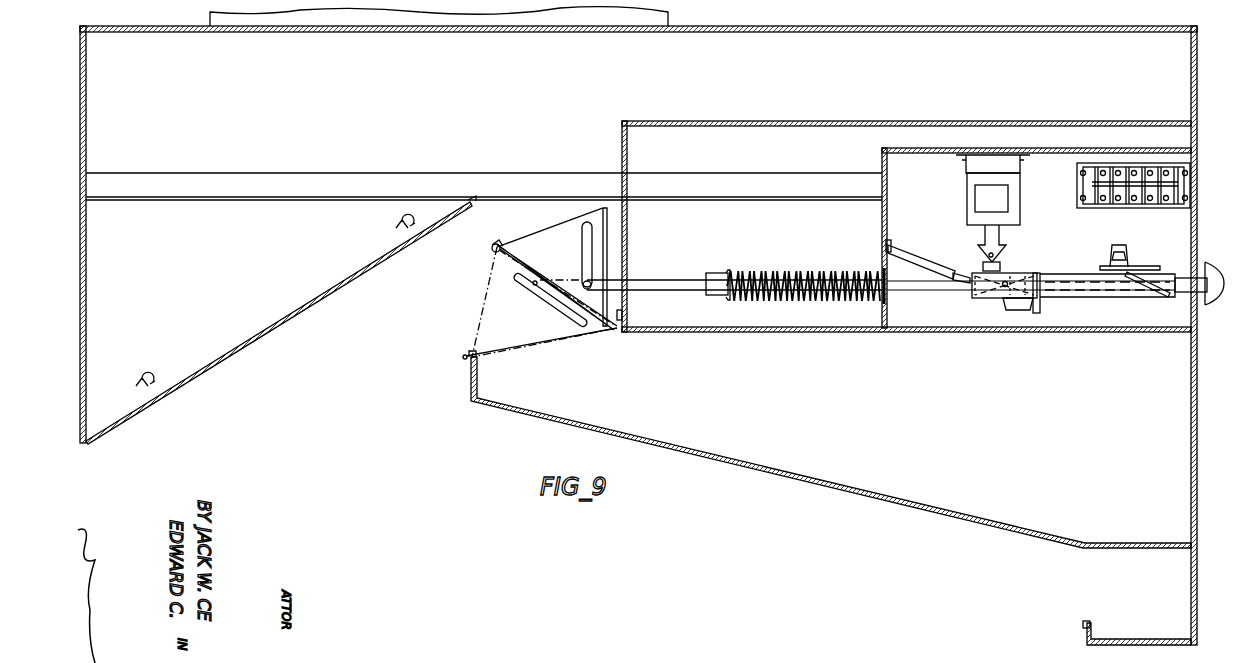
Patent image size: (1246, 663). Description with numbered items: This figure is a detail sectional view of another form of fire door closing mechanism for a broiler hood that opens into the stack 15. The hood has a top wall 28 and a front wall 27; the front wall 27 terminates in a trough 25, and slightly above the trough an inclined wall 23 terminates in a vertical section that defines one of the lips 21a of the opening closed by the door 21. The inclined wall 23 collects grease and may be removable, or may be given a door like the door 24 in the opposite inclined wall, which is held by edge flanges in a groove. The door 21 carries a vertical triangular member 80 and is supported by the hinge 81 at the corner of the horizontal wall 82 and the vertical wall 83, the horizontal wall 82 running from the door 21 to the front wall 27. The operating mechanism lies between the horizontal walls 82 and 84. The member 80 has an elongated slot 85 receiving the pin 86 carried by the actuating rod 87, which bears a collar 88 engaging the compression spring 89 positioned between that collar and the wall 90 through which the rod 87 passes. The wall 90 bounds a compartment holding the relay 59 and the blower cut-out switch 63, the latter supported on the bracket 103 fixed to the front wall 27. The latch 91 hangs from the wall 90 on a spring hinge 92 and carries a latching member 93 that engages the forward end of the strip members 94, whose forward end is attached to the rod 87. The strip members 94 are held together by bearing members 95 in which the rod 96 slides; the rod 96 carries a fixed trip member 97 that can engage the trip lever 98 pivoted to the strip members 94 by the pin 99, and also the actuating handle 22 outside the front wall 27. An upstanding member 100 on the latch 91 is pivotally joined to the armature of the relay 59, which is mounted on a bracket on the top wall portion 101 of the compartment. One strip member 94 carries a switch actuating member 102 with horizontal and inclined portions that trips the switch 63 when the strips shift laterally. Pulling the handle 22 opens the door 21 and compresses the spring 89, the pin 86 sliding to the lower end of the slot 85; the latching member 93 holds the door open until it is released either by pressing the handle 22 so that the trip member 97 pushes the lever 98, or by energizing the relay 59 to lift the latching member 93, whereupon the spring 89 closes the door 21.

The stack 15 is at (670, 12).
The top wall 28 is at (870, 26).
The front wall 27 is at (1191, 396).
The door 24 is at (256, 326).
The inclined wall 23 is at (772, 470).
The trough 25 is at (1110, 638).
The horizontal wall 84 is at (680, 126).
The horizontal wall 82 is at (692, 336).
The top wall portion 101 is at (985, 150).
The relay 59 is at (985, 198).
The upstanding member 100 is at (996, 262).
The blower cut-out switch 63 is at (1110, 250).
The bracket 103 is at (1122, 258).
The door 21 is at (500, 252).
The vertical triangular member 80 is at (528, 240).
The lip 21a is at (462, 364).
The hinge 81 is at (616, 333).
The elongated slot 85 is at (588, 240).
The vertical wall 83 is at (624, 314).
The actuating rod 87 is at (690, 280).
The pin 86 is at (600, 281).
The collar 88 is at (730, 270).
The compression spring 89 is at (802, 272).
The wall 90 is at (886, 245).
The spring hinge 92 is at (891, 244).
The latch 91 is at (940, 268).
The latching member 93 is at (965, 283).
The strip members 94 is at (1022, 278).
The pin 99 is at (1003, 290).
The trip lever 98 is at (1014, 310).
The trip member 97 is at (1042, 310).
The bearing members 95 is at (1123, 300).
The switch actuating member 102 is at (1135, 275).
The actuating handle 22 is at (1185, 296).
The rod 96 is at (1202, 270).